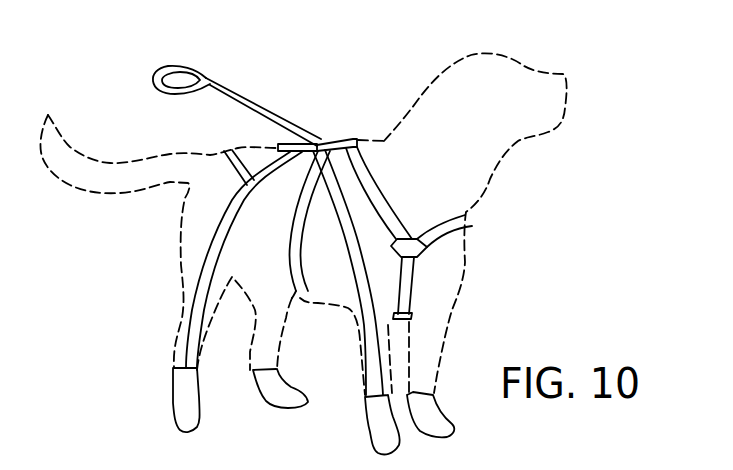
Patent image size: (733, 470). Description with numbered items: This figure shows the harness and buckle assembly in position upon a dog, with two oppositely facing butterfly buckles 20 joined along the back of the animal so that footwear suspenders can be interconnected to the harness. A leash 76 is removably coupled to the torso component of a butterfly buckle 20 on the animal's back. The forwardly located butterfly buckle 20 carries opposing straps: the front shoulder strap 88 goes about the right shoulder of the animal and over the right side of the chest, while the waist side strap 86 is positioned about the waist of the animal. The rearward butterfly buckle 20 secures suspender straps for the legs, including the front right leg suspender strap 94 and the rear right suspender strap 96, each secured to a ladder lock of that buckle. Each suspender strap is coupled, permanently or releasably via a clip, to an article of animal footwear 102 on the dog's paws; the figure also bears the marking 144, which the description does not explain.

The butterfly buckle 20 is at (291, 146).
The leash 76 is at (208, 86).
The waist side strap 86 is at (293, 258).
The front shoulder strap 88 is at (365, 190).
The front right leg suspender strap 94 is at (370, 323).
The rear right suspender strap 96 is at (195, 318).
The article of animal footwear 102 is at (195, 415).
The boot sole 144 is at (67, 466).